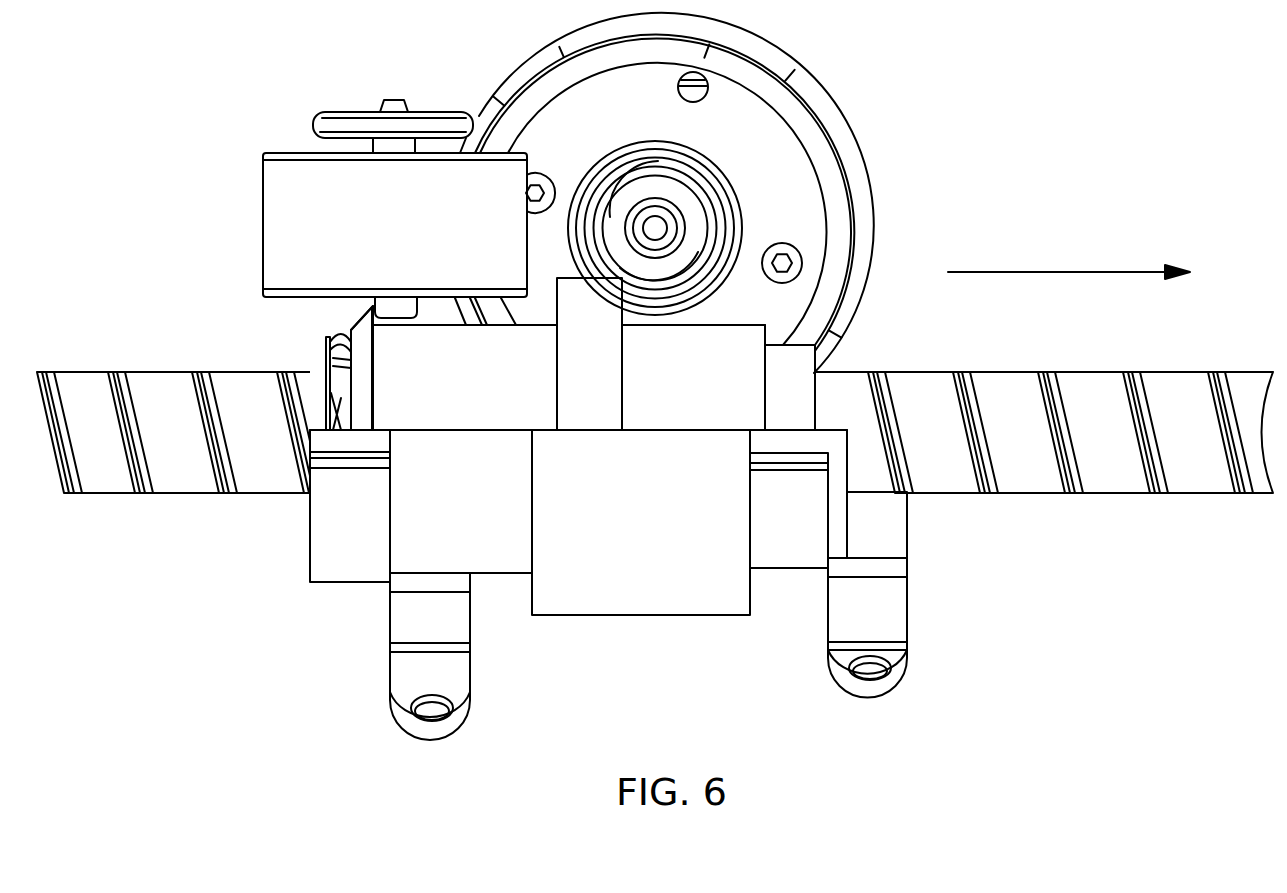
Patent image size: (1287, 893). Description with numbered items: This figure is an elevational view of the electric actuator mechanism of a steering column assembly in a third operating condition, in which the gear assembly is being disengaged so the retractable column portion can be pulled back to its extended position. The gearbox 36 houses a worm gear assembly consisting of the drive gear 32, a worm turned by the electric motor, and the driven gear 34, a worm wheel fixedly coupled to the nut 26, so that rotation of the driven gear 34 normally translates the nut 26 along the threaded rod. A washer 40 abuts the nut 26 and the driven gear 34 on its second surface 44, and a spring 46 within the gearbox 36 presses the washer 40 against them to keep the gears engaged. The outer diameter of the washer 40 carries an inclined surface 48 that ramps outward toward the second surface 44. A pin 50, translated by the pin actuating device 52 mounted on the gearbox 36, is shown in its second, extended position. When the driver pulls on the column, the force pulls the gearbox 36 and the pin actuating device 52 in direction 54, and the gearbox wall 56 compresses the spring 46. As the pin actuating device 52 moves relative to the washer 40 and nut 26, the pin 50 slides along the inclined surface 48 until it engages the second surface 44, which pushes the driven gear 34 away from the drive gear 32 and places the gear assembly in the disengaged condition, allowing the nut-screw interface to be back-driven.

The nut 26 is at (750, 383).
The drive gear 32 is at (680, 230).
The driven gear 34 is at (598, 326).
The gearbox 36 is at (328, 572).
The washer 40 is at (345, 362).
The second surface 44 is at (372, 347).
The spring 46 is at (342, 397).
The inclined surface 48 is at (363, 325).
The pin 50 is at (387, 307).
The pin actuating device 52 is at (278, 200).
The direction 54 is at (1055, 268).
The gearbox wall 56 is at (324, 372).